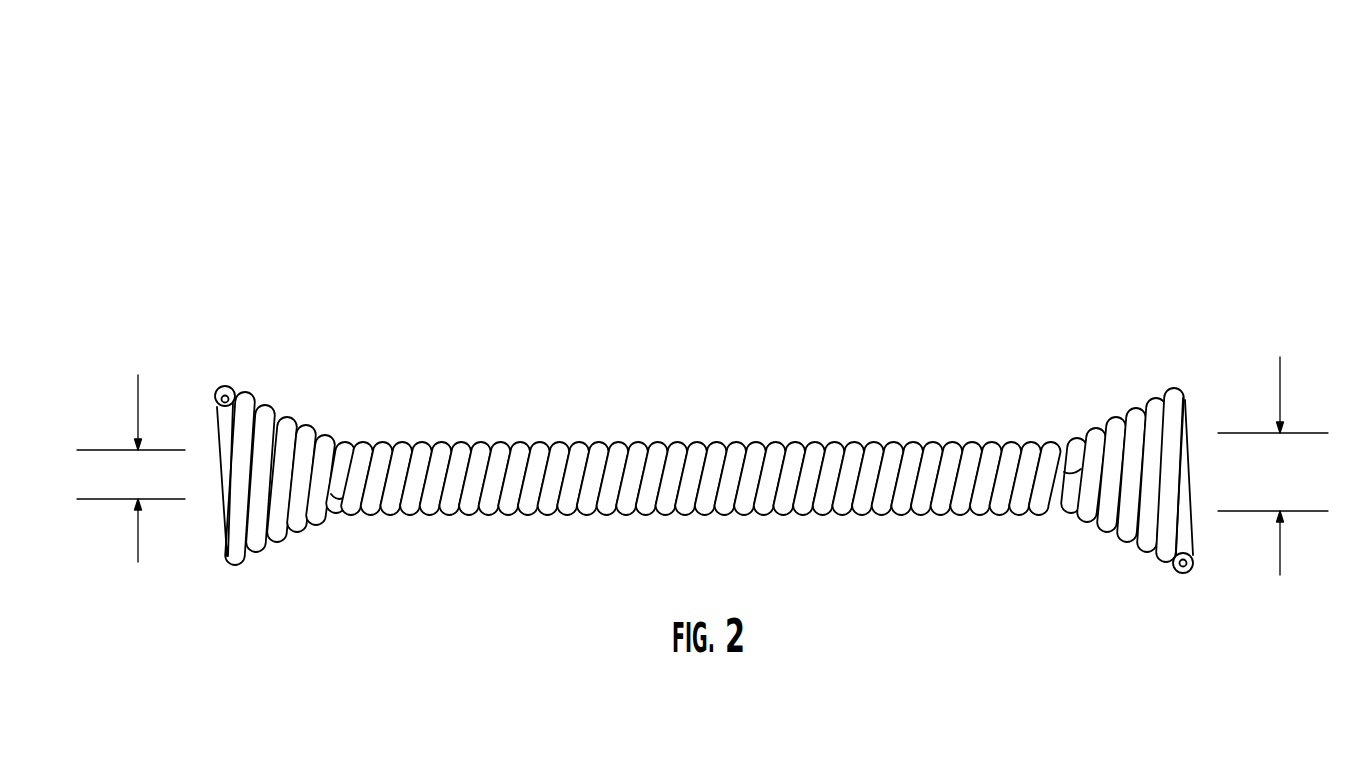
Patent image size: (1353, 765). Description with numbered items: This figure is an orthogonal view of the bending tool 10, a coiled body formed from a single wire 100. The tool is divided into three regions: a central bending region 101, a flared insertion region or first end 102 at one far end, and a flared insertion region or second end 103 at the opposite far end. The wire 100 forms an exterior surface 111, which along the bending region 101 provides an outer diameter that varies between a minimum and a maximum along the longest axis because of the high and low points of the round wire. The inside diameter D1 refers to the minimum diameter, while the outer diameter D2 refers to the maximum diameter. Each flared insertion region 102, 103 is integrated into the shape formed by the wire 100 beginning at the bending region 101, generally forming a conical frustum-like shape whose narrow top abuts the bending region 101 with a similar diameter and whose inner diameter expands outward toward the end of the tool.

The bending tool 10 is at (704, 373).
The wire 100 is at (1182, 573).
The bending region 101 is at (700, 416).
The flared insertion region or first end 102 is at (283, 417).
The flared insertion region or second end 103 is at (1135, 405).
The exterior surface 111 is at (797, 440).
The inside diameter D1 is at (131, 488).
The outer diameter D2 is at (1273, 483).